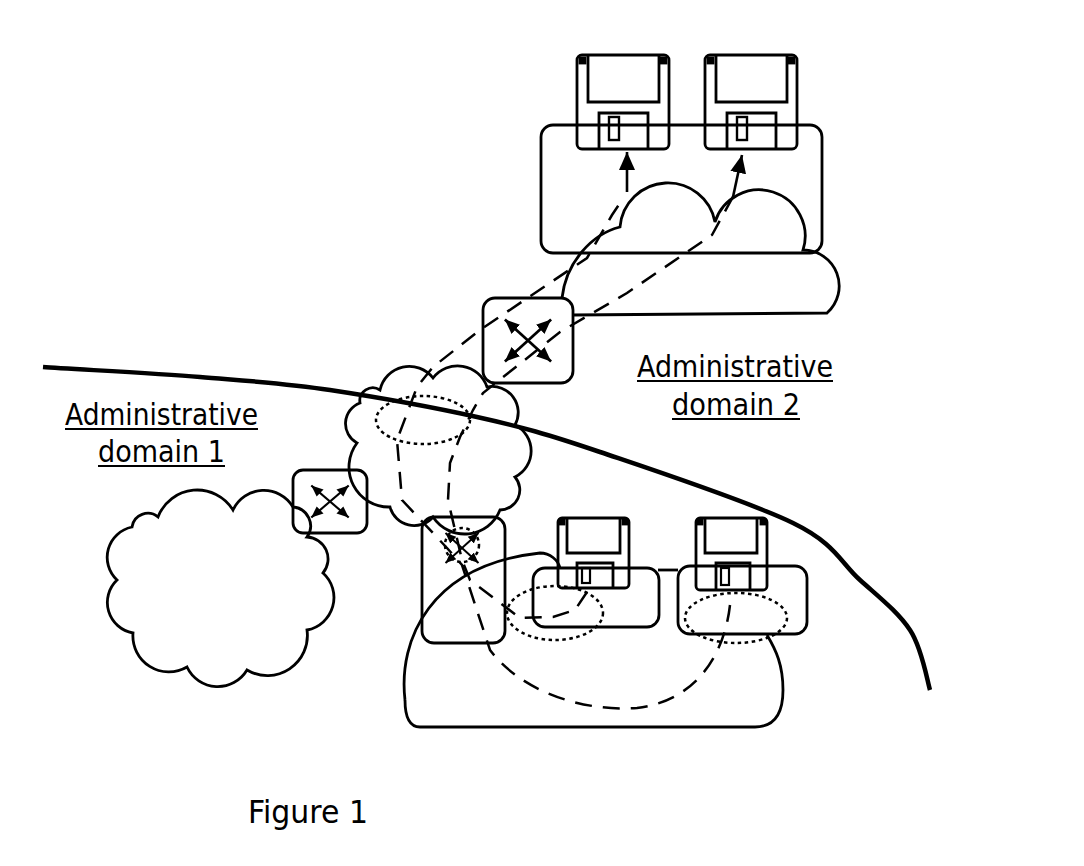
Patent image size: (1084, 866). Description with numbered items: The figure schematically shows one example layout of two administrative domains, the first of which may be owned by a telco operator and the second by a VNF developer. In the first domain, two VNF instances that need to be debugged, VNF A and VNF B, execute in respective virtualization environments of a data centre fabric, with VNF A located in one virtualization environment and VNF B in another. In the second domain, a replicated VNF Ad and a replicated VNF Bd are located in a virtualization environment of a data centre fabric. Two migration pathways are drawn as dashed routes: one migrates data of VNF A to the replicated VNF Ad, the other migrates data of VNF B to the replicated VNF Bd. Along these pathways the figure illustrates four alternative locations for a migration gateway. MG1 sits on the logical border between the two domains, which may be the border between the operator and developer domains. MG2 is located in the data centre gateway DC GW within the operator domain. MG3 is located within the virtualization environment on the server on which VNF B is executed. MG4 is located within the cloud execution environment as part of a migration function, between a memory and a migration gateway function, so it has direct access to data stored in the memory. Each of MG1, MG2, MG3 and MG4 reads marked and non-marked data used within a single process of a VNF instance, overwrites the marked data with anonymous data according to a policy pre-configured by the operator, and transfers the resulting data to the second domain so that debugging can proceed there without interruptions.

The migration gateway MG1 is at (383, 413).
The migration gateway MG2 is at (455, 547).
The migration gateway MG3 is at (557, 640).
The migration gateway MG4 is at (770, 637).
The VNF instance VNF A is at (767, 540).
The VNF instance VNF B is at (593, 538).
The replicated VNF VNF Ad is at (615, 85).
The replicated VNF VNF Bd is at (752, 85).
The data centre gateway DC GW is at (463, 580).